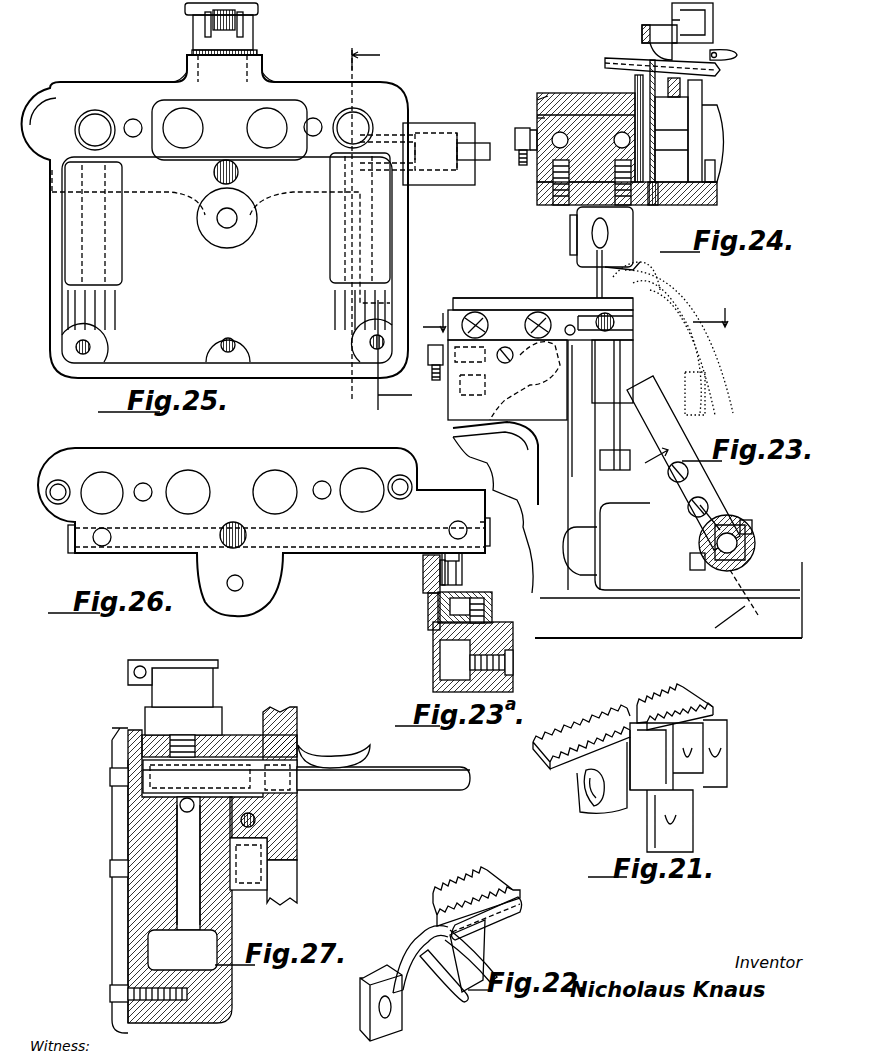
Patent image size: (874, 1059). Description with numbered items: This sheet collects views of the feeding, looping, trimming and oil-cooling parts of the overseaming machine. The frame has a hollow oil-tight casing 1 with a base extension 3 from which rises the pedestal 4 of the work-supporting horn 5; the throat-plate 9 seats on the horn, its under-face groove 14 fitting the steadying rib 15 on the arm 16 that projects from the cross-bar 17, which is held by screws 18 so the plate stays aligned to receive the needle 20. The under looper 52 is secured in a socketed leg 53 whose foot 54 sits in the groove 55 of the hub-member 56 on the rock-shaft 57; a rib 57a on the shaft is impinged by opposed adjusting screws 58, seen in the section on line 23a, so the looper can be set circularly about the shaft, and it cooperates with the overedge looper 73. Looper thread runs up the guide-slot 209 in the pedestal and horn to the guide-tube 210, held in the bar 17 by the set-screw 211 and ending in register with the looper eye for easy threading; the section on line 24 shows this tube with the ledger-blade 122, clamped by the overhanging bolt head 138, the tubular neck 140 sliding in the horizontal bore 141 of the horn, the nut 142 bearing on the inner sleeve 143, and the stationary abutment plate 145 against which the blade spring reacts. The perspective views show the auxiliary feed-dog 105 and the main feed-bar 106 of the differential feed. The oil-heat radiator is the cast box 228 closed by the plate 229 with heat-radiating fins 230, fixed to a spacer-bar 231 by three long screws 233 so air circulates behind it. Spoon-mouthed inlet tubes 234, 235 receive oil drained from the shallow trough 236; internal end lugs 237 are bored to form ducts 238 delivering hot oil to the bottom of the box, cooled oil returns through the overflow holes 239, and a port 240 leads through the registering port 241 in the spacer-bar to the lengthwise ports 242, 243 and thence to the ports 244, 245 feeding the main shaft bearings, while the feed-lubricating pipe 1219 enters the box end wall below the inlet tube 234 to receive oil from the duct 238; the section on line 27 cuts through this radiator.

In FIG. 27, the hollow oil-tight casing 1 is at (287, 707).
In FIG. 23, the base extension 3 is at (573, 638).
In FIG. 23, the pedestal 4 is at (566, 500).
In FIG. 24, the work-supporting horn 5 is at (560, 93).
In FIG. 23, the work-supporting horn 5 is at (460, 428).
In FIG. 23, the throat-plate 9 is at (503, 303).
In FIG. 23, the groove 14 is at (635, 290).
In FIG. 24, the steadying rib 15 is at (708, 162).
In FIG. 24, the arm 16 is at (714, 148).
In FIG. 24, the cross-bar 17 is at (685, 205).
In FIG. 23, the cross-bar 17 is at (485, 300).
In FIG. 23, the screws 18 is at (535, 312).
In FIG. 24, the needle 20 is at (722, 62).
In FIG. 23, the needle 20 is at (597, 267).
In FIG. 23, the section line 24— 24 is at (570, 315).
In FIG. 23, the section line 23a— 23a is at (688, 537).
In FIG. 25, the section line 27— 27 is at (382, 229).
In FIG. 24, the under looper 52 is at (645, 60).
In FIG. 23, the under looper 52 is at (502, 386).
In FIG. 23A, the under looper 52 is at (428, 602).
In FIG. 22, the under looper 52 is at (441, 990).
In FIG. 23, the socketed leg 53 is at (641, 412).
In FIG. 23A, the socketed leg 53 is at (423, 568).
In FIG. 23, the foot 54 is at (705, 505).
In FIG. 23A, the foot 54 is at (480, 606).
In FIG. 23A, the groove 55 is at (440, 618).
In FIG. 23A, the hub-member 56 is at (490, 630).
In FIG. 23, the rock-shaft 57 is at (755, 548).
In FIG. 23, the rib 57a is at (740, 520).
In FIG. 23, the adjusting screws 58 is at (693, 560).
In FIG. 23A, the adjusting screws 58 is at (437, 678).
In FIG. 23, the overedge looper 73 is at (633, 277).
In FIG. 21, the auxiliary feed-dog 105 is at (690, 702).
In FIG. 24, the main feed-bar 106 is at (680, 88).
In FIG. 21, the main feed-bar 106 is at (590, 718).
In FIG. 22, the main feed-bar 106 is at (458, 880).
In FIG. 24, the ledger-blade 122 is at (700, 97).
In FIG. 23, the ledger-blade 122 is at (622, 470).
In FIG. 24, the overhanging bolt head 138 is at (712, 117).
In FIG. 24, the tubular neck 140 is at (597, 94).
In FIG. 24, the horizontal bore 141 is at (537, 122).
In FIG. 24, the nut 142 is at (522, 165).
In FIG. 23, the nut 142 is at (437, 381).
In FIG. 24, the inner sleeve 143 is at (524, 166).
In FIG. 23, the inner sleeve 143 is at (447, 399).
In FIG. 24, the stationary abutment plate 145 is at (540, 94).
In FIG. 23, the stationary abutment plate 145 is at (462, 365).
In FIG. 23, the guide-slot 209 is at (568, 400).
In FIG. 24, the guide-tube 210 is at (688, 140).
In FIG. 23, the guide-tube 210 is at (570, 325).
In FIG. 22, the guide-tube 210 is at (518, 905).
In FIG. 24, the set-screw 211 is at (652, 205).
In FIG. 23, the set-screw 211 is at (604, 313).
In FIG. 25, the oil-heat radiating sub-compartment 228 is at (107, 371).
In FIG. 27, the oil-heat radiating sub-compartment 228 is at (220, 993).
In FIG. 27, the removable cover plate 229 is at (128, 957).
In FIG. 27, the heat-radiating fins 230 is at (112, 932).
In FIG. 25, the spacer-bar 231 is at (305, 192).
In FIG. 26, the spacer-bar 231 is at (270, 451).
In FIG. 27, the spacer-bar 231 is at (240, 735).
In FIG. 27, the long screws 233 is at (110, 776).
In FIG. 25, the oil-catching inlet tube 234 is at (372, 110).
In FIG. 27, the oil-catching inlet tube 234 is at (320, 793).
In FIG. 25, the oil-catching inlet tube 235 is at (95, 110).
In FIG. 27, the oil-spray-catching trough 236 is at (330, 747).
In FIG. 25, the end lugs 237 is at (120, 283).
In FIG. 27, the end lugs 237 is at (182, 883).
In FIG. 25, the ducts 238 is at (110, 250).
In FIG. 27, the ducts 238 is at (175, 842).
In FIG. 25, the oil-return holes 239 is at (266, 148).
In FIG. 25, the port 240 is at (214, 172).
In FIG. 27, the port 240 is at (270, 868).
In FIG. 26, the registering port 241 is at (233, 522).
In FIG. 26, the lengthwise port 242 is at (180, 548).
In FIG. 26, the lengthwise port 243 is at (375, 548).
In FIG. 27, the lengthwise port 243 is at (256, 822).
In FIG. 26, the port 244 is at (78, 551).
In FIG. 26, the port 245 is at (468, 548).
In FIG. 25, the feed-lubricating pipe 1219 is at (482, 145).
In FIG. 27, the feed-lubricating pipe 1219 is at (180, 805).